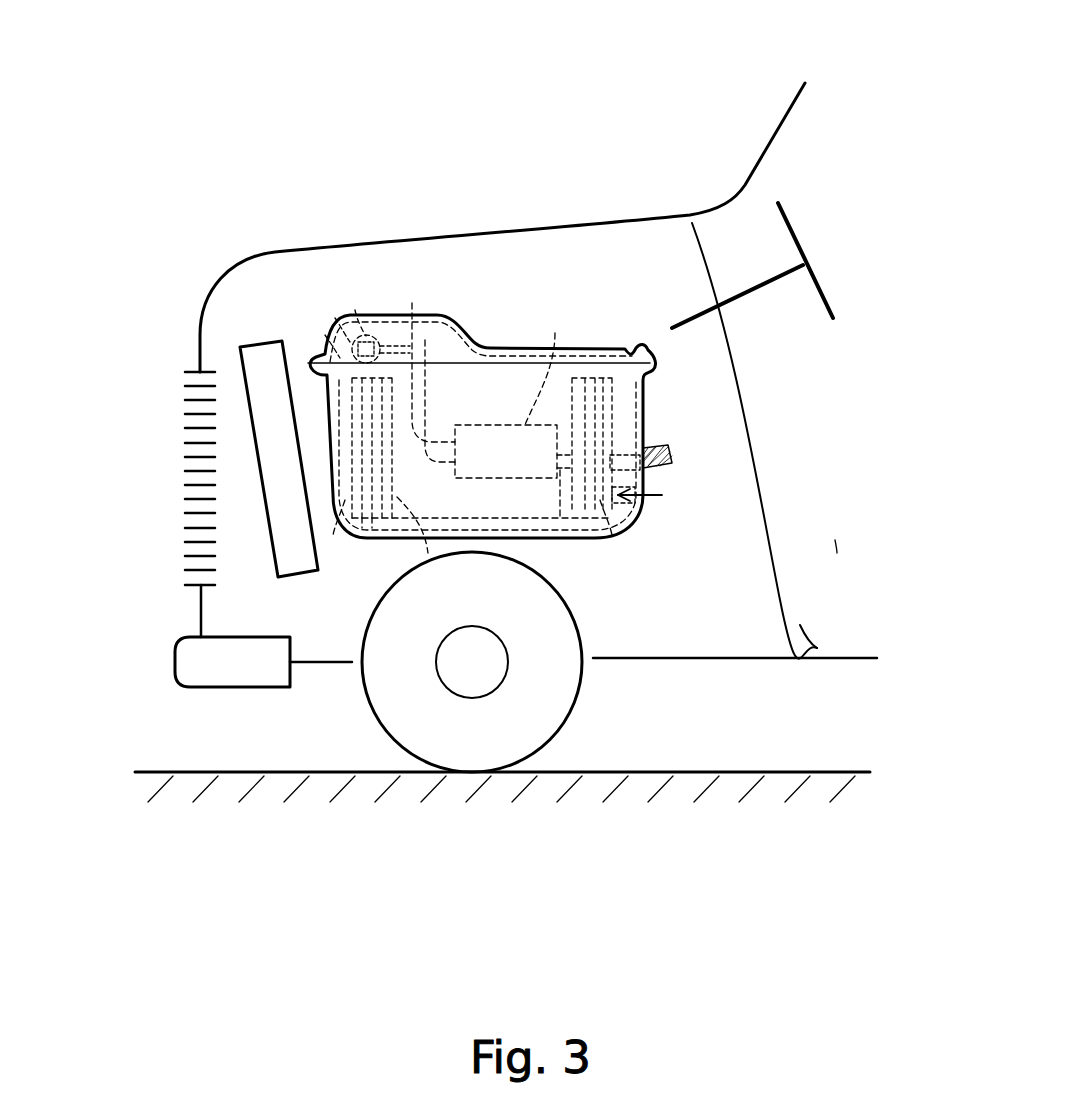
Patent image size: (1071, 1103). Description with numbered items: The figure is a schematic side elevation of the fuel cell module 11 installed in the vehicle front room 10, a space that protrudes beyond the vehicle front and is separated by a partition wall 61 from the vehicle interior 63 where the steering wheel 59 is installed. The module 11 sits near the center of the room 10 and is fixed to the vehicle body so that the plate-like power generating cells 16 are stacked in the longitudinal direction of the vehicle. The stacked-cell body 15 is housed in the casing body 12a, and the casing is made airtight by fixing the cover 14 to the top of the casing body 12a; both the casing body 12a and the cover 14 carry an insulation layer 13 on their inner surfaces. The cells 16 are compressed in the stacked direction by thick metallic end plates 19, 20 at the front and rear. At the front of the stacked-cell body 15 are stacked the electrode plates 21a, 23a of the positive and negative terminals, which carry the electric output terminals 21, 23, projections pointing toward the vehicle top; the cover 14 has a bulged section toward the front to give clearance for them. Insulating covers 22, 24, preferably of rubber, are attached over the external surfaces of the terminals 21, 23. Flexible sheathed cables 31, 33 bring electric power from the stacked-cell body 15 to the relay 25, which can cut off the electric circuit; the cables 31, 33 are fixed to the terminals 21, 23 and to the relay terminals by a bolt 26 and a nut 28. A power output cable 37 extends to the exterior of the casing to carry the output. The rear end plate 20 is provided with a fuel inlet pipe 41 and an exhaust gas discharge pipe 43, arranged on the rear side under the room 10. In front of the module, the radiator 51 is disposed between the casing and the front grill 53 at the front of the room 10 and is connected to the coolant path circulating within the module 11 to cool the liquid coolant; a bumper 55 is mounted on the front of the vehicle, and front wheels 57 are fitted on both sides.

The vehicle front room 10 is at (610, 205).
The fuel cell module 11 is at (688, 419).
The casing body 12a is at (633, 525).
The insulation layer 13 is at (490, 337).
The cover 14 is at (453, 303).
The stacked-cell body 15 is at (563, 527).
The power generating cells 16 is at (425, 557).
The end plate 19 is at (338, 530).
The end plate 20 is at (610, 540).
The electric output terminal 21 is at (322, 322).
The electric output terminal 23 is at (355, 310).
The electrode plate 21a is at (301, 706).
The electrode plate 23a is at (367, 540).
The insulating cover 22 is at (260, 263).
The insulating cover 24 is at (335, 318).
The relay 25 is at (555, 333).
The bolt 26 is at (325, 335).
The nut 28 is at (380, 305).
The sheathed cable 31 is at (417, 270).
The sheathed cable 33 is at (413, 303).
The power output cable 37 is at (668, 457).
The fuel inlet pipe 41 is at (727, 446).
The exhaust gas discharge pipe 43 is at (650, 480).
The radiator 51 is at (272, 568).
The front grill 53 is at (188, 445).
The bumper 55 is at (175, 665).
The front wheels 57 is at (428, 717).
The steering wheel 59 is at (788, 220).
The partition wall 61 is at (780, 600).
The vehicle interior 63 is at (837, 553).